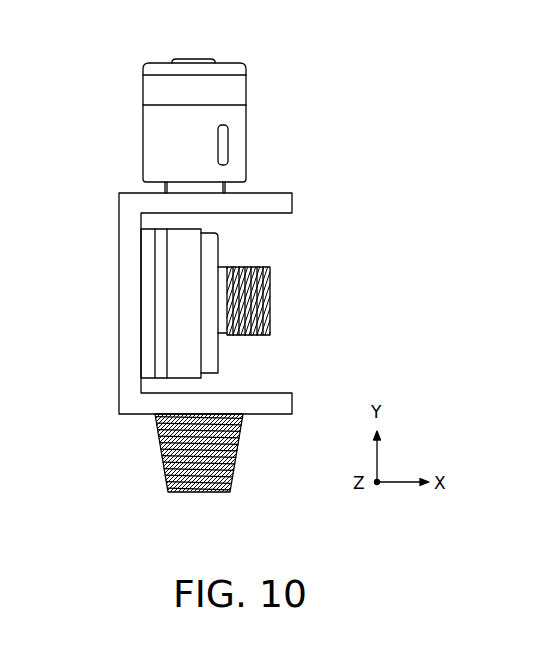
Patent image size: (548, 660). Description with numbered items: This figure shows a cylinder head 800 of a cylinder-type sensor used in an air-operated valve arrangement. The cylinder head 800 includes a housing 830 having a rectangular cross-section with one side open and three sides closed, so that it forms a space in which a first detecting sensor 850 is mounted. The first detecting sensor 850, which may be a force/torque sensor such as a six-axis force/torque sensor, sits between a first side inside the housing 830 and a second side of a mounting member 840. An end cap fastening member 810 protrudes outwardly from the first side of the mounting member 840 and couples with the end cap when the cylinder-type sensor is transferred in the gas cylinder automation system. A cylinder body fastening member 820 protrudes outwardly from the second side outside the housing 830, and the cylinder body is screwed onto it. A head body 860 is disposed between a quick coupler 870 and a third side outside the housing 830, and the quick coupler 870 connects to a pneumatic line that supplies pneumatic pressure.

The cylinder head 800 is at (325, 40).
The end cap fastening member 810 is at (270, 297).
The cylinder body fastening member 820 is at (201, 496).
The housing 830 is at (130, 342).
The mounting member 840 is at (211, 249).
The first detecting sensor 850 is at (162, 268).
The head body 860 is at (155, 137).
The quick coupler 870 is at (187, 59).